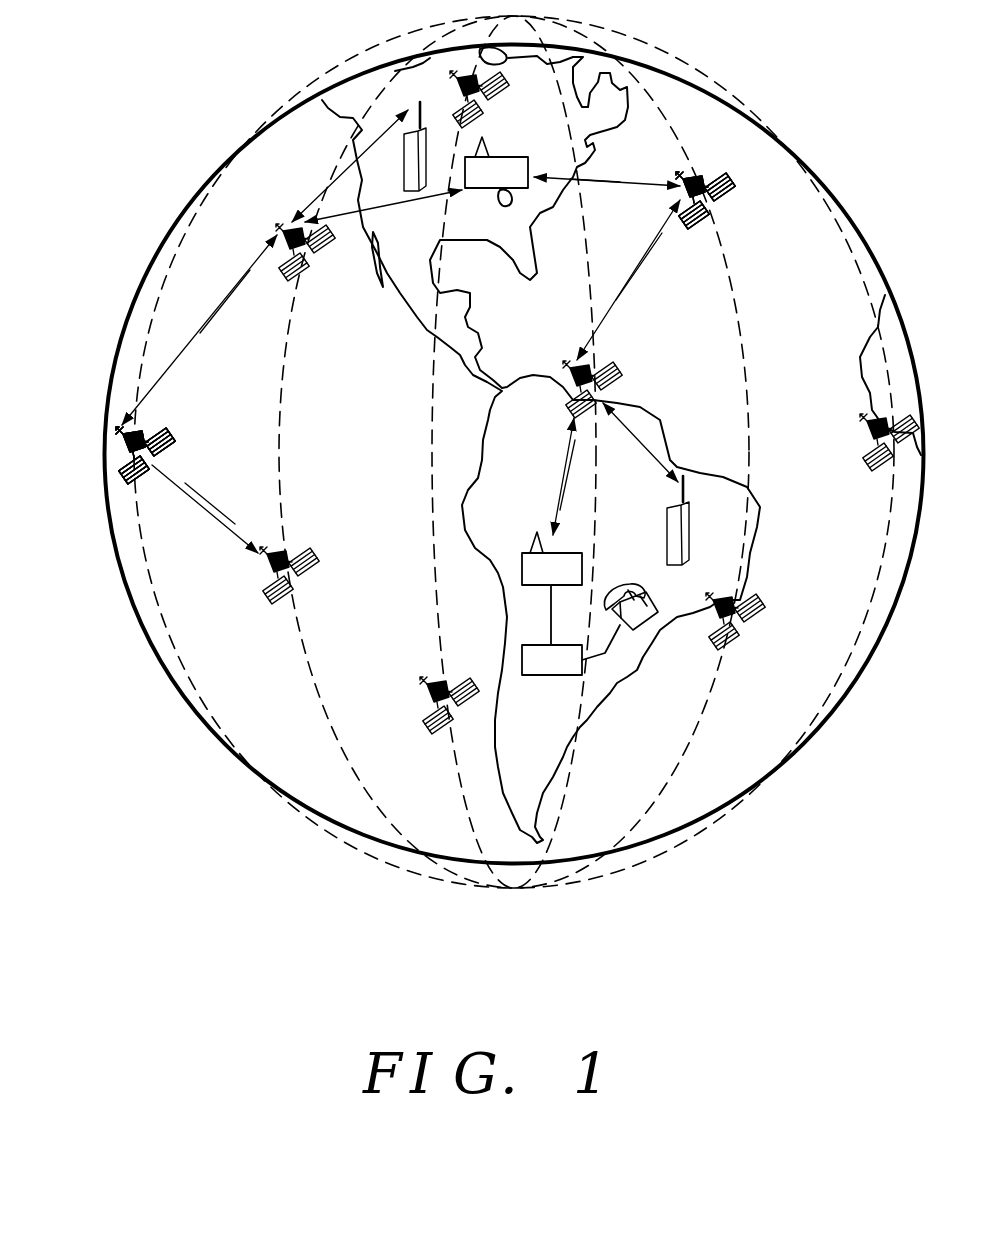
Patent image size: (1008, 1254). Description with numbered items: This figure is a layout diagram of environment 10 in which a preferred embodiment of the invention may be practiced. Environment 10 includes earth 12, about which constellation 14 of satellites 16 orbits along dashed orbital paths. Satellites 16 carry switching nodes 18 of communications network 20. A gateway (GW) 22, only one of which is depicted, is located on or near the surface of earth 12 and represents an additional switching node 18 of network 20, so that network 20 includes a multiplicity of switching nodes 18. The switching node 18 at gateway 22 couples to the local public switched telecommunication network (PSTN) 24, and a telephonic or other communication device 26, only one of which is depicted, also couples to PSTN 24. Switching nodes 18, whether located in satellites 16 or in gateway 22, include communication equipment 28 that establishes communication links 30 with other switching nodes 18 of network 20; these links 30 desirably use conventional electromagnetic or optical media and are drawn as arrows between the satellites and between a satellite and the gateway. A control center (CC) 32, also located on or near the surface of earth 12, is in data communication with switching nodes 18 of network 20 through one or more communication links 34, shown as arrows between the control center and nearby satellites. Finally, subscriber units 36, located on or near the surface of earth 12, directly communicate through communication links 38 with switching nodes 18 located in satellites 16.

The environment 10 is at (508, 983).
The earth 12 is at (868, 238).
The constellation 14 is at (664, 55).
The satellites 16 is at (730, 193).
The switching nodes 18 is at (718, 215).
The communications network 20 is at (797, 126).
The gateway 22 is at (520, 562).
The public switched telecommunication network 24 is at (548, 677).
The communication device 26 is at (647, 604).
The communication equipment 28 is at (702, 228).
The communication links 30 is at (647, 265).
The control center 32 is at (500, 188).
The communication links 34 is at (403, 205).
The subscriber units 36 is at (404, 165).
The communication links 38 is at (322, 193).